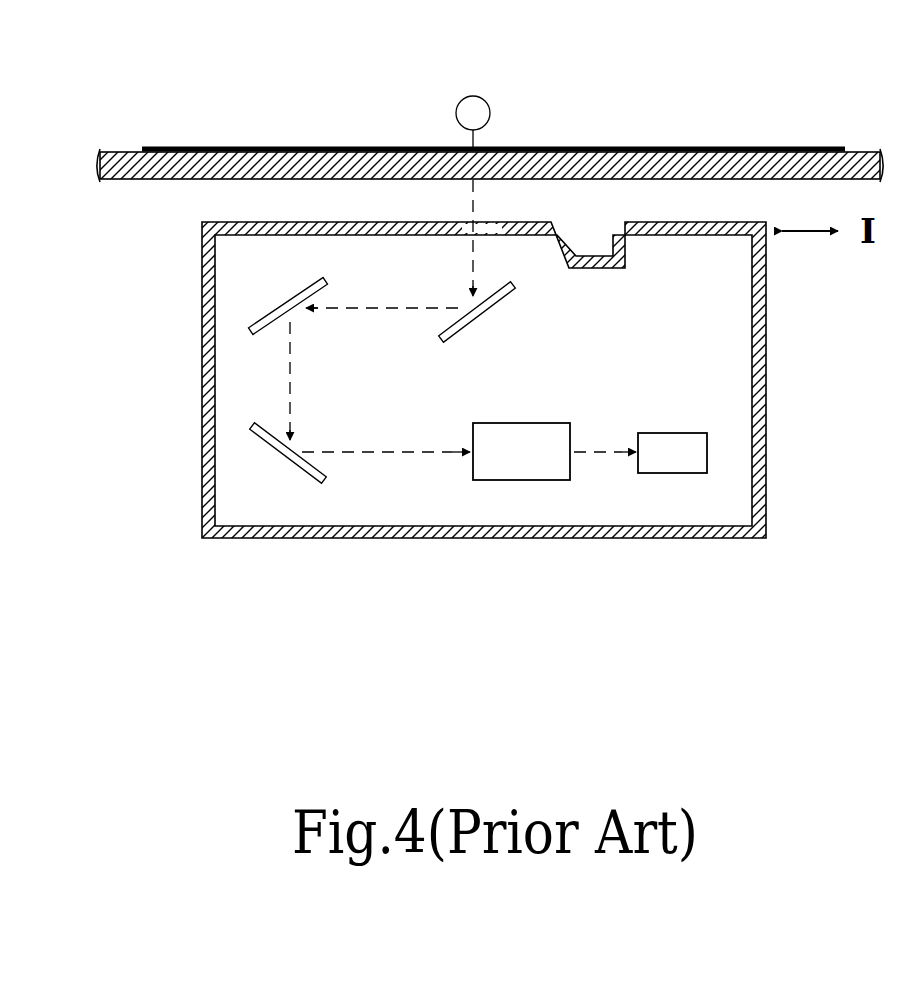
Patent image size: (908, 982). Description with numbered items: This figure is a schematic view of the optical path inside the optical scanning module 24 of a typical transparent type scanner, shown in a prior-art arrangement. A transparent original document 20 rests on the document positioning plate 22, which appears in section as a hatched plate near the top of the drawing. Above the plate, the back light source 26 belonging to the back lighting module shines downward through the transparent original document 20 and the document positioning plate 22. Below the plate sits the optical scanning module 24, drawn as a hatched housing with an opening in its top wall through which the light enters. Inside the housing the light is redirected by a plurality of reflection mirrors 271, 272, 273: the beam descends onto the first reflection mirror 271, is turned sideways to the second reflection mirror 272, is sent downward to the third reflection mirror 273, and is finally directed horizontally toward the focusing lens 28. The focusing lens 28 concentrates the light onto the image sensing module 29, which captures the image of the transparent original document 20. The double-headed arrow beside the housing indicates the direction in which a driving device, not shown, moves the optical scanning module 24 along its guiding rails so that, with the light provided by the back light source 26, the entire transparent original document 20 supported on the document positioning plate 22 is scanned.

The transparent original document 20 is at (405, 148).
The document positioning plate 22 is at (258, 150).
The optical scanning module 24 is at (201, 420).
The back light source 26 is at (491, 110).
The reflection mirror 271 is at (505, 300).
The reflection mirror 272 is at (283, 302).
The reflection mirror 273 is at (307, 472).
The focusing lens 28 is at (527, 470).
The image sensing module 29 is at (672, 465).